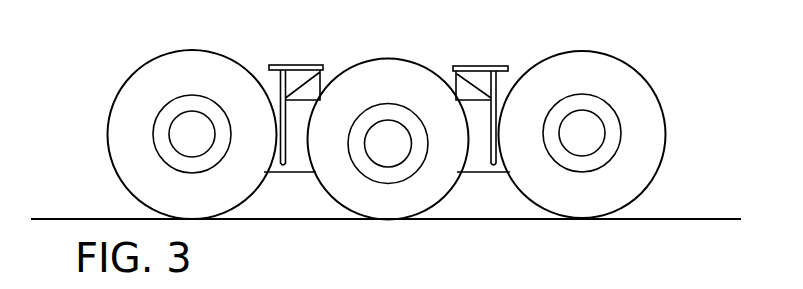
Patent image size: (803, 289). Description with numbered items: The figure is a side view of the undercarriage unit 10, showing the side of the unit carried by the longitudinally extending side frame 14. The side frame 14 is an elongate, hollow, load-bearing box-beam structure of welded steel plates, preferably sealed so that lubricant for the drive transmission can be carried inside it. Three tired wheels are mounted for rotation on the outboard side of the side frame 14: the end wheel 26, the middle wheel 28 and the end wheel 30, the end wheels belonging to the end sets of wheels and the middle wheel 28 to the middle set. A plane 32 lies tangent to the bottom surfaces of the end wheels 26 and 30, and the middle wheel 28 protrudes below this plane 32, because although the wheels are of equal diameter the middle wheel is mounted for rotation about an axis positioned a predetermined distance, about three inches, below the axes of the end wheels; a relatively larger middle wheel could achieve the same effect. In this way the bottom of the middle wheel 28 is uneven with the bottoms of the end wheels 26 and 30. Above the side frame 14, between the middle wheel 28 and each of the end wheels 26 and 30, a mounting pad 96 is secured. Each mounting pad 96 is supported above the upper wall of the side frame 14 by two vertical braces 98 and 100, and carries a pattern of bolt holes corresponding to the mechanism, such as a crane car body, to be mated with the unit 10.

The undercarriage unit 10 is at (84, 83).
The side frame 14 is at (299, 150).
The end wheel 26 is at (138, 183).
The middle wheel 28 is at (437, 188).
The end wheel 30 is at (635, 162).
The plane 32 is at (662, 218).
The mounting pad 96 is at (298, 65).
The vertical brace 98 is at (279, 87).
The vertical brace 100 is at (320, 87).